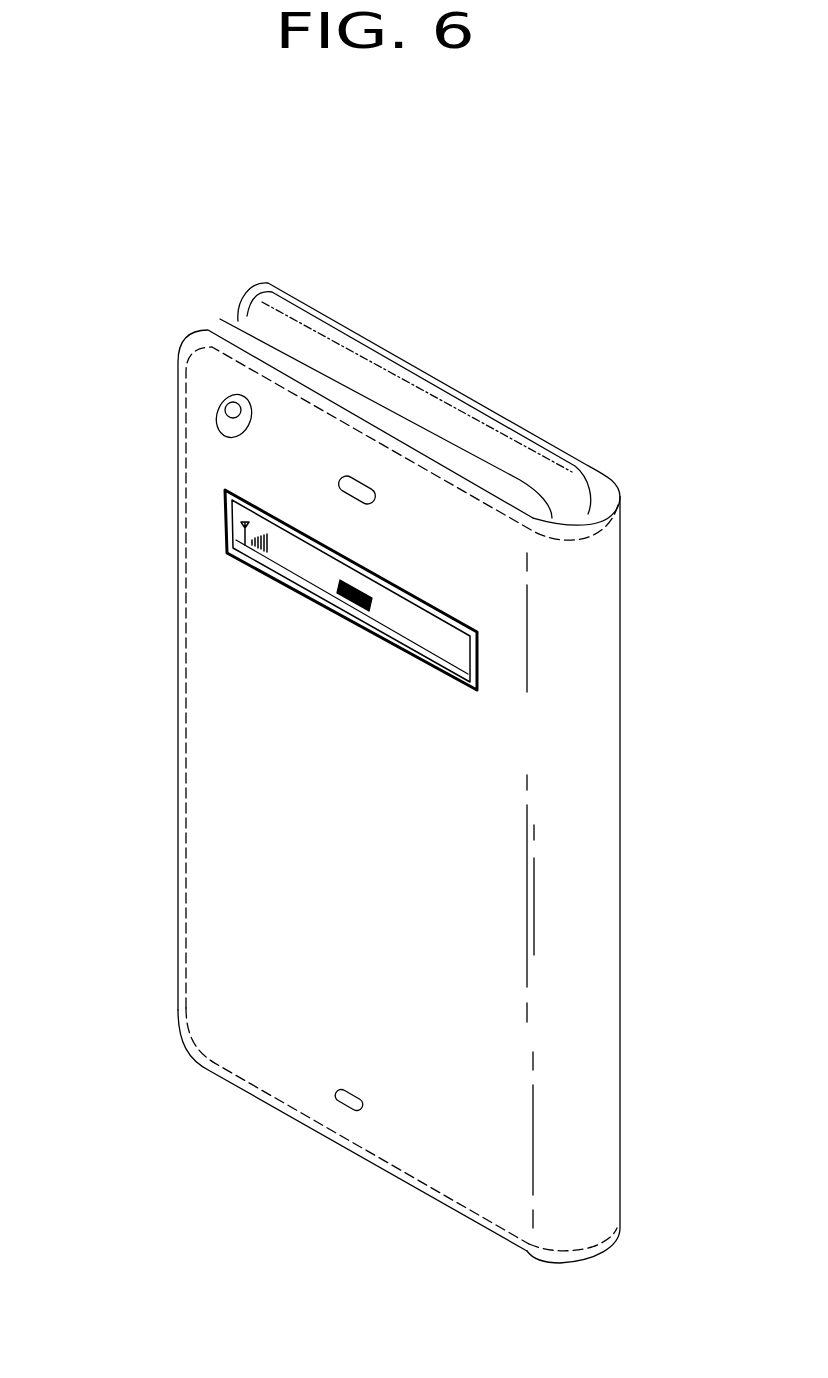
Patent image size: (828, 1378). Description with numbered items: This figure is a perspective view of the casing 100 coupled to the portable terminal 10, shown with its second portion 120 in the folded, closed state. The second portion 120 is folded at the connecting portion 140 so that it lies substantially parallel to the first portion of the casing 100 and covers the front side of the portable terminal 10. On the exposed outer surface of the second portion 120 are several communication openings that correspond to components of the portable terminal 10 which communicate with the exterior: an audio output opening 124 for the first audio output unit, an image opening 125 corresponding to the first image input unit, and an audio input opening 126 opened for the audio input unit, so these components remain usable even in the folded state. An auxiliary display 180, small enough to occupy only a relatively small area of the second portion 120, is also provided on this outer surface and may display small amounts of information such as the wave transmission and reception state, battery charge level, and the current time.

The portable terminal 10 is at (220, 319).
The casing 100 is at (170, 898).
The second portion 120 is at (220, 683).
The audio output opening 124 is at (357, 488).
The image opening 125 is at (224, 410).
The audio input opening 126 is at (348, 1103).
The connecting portion 140 is at (593, 893).
The auxiliary display 180 is at (222, 519).